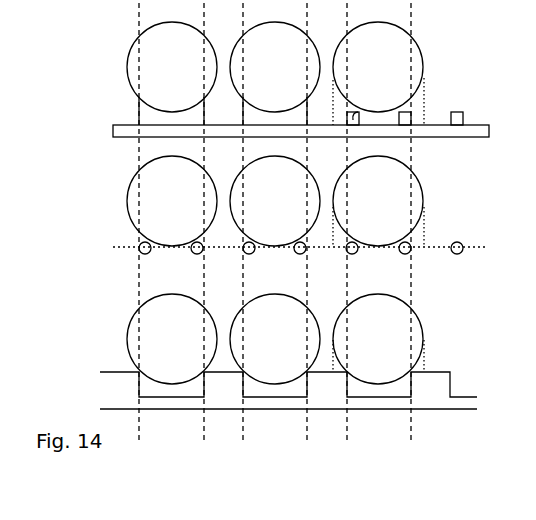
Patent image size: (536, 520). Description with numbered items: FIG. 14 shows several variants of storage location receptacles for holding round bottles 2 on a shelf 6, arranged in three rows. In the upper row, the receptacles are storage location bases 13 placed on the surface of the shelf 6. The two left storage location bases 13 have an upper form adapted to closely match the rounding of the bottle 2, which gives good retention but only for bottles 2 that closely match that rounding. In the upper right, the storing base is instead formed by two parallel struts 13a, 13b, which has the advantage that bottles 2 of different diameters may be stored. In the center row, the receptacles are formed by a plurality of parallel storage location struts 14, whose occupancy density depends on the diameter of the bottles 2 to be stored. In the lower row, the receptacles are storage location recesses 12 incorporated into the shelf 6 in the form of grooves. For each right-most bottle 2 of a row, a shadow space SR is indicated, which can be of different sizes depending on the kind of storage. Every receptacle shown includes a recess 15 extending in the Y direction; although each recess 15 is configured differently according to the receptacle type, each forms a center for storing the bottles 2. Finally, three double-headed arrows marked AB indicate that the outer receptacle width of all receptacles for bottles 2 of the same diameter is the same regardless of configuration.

The bottle 2 is at (172, 58).
The shelf 6 is at (127, 132).
The storage location recess 12 is at (150, 388).
The storage location base 13 is at (152, 115).
The strut 13a is at (406, 110).
The strut 13b is at (355, 110).
The storage location strut 14 is at (143, 244).
The recess 15 is at (172, 110).
The shadow space SR is at (418, 108).
The outer receptacle width AB is at (204, 448).